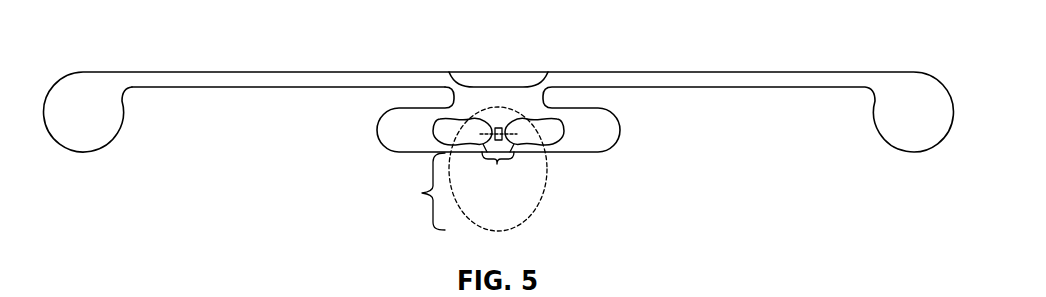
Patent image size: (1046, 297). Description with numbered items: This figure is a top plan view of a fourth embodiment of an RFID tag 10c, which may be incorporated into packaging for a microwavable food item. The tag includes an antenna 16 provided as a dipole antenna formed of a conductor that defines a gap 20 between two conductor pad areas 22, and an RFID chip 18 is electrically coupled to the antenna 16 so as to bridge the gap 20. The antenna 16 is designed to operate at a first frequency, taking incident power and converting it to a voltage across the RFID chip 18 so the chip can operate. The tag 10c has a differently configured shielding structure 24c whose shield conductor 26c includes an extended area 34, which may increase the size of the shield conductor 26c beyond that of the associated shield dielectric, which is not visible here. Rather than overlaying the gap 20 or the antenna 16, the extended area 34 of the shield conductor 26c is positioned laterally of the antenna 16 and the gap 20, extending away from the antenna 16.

The RFID tag 10c is at (607, 56).
The antenna 16 is at (267, 87).
The RFID chip 18 is at (499, 128).
The gap 20 is at (498, 171).
The conductor pad areas 22 is at (472, 126).
The shielding structure 24c is at (561, 170).
The shield conductor 26c is at (523, 198).
The extended area 34 is at (415, 191).